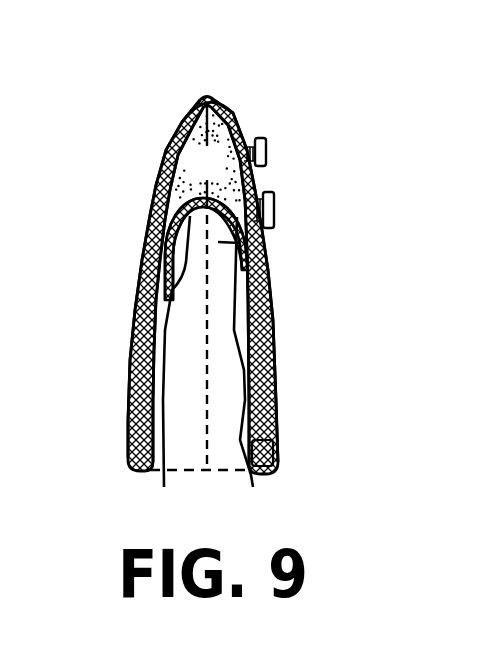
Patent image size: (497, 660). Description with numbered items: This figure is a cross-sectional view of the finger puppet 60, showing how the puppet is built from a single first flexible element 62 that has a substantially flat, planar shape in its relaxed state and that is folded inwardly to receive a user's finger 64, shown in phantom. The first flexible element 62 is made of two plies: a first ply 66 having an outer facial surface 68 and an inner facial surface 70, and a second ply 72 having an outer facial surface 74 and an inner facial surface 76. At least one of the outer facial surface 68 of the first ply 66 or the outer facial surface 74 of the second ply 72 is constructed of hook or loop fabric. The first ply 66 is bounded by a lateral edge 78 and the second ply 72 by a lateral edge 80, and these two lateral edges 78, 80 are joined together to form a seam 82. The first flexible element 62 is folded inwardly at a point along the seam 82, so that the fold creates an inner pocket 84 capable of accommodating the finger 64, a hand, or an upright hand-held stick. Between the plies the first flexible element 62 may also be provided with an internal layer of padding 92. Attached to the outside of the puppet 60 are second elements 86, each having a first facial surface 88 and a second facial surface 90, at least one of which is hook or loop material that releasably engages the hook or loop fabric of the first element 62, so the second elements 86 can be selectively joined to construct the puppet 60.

The finger puppet 60 is at (270, 287).
The first flexible element 62 is at (278, 333).
The finger 64 is at (256, 490).
The first ply 66 is at (237, 115).
The outer facial surface 68 is at (273, 303).
The inner facial surface 70 is at (240, 125).
The second ply 72 is at (158, 203).
The outer facial surface 74 is at (150, 232).
The inner facial surface 76 is at (147, 280).
The lateral edge 78 is at (220, 102).
The lateral edge 80 is at (198, 102).
The seam 82 is at (207, 100).
The inner pocket 84 is at (278, 445).
The second element 86 is at (273, 203).
The first facial surface 88 is at (320, 214).
The second facial surface 90 is at (273, 220).
The internal layer of padding 92 is at (267, 253).